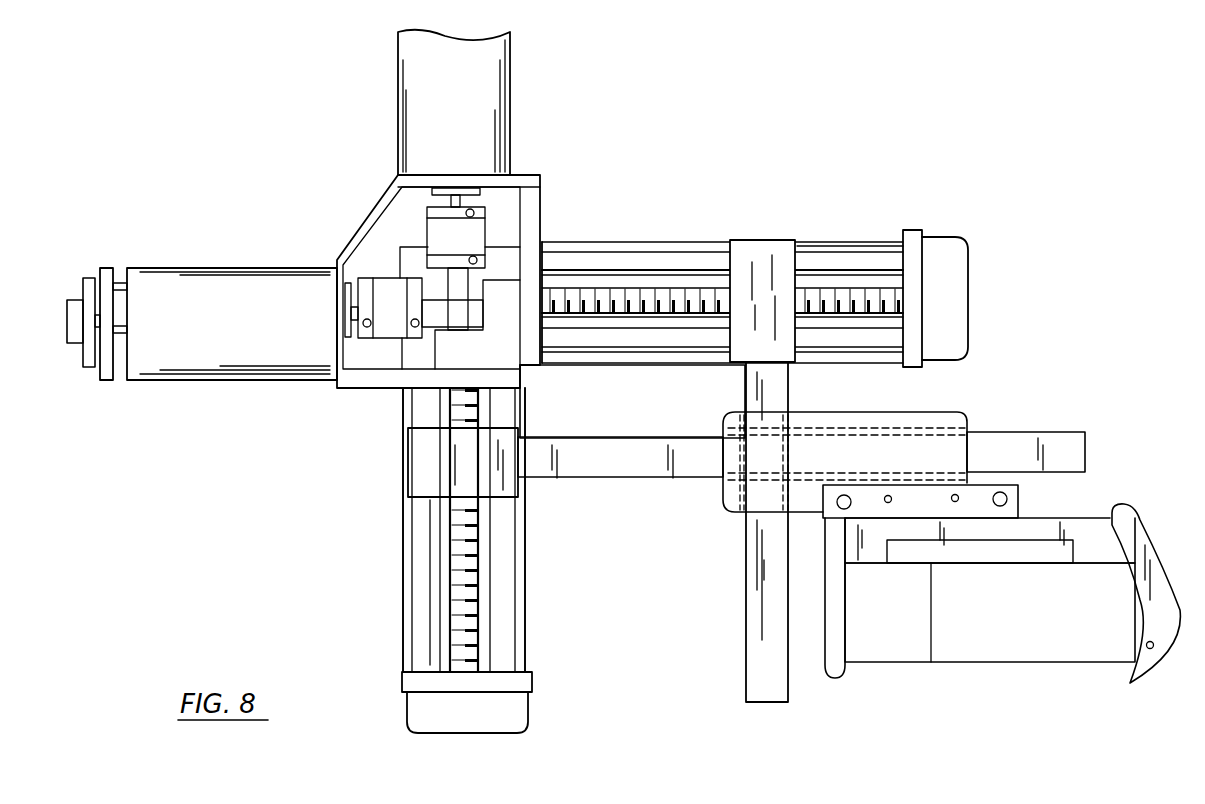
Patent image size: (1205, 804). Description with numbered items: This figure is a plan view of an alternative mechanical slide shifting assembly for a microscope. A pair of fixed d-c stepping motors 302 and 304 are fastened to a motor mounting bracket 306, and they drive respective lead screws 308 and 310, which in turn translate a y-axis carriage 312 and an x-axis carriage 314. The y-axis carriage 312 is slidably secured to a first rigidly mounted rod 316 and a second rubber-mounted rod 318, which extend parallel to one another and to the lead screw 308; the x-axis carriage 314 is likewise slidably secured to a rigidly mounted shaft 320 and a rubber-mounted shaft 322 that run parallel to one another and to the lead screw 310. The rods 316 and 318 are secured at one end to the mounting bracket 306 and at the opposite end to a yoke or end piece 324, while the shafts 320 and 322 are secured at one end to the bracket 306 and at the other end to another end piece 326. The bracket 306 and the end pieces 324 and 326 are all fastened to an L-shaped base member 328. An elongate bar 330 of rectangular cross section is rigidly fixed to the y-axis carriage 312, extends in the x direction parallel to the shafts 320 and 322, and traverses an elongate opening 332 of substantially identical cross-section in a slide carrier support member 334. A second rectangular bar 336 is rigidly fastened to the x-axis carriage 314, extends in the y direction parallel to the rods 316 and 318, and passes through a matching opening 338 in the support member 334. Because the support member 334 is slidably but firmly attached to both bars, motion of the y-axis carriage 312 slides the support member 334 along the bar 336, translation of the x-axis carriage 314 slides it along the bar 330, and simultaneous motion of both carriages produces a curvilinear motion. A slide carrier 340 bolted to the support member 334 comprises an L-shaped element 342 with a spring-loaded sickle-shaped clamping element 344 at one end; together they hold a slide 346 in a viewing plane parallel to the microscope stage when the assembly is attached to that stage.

The fixed d-c stepping motor 302 is at (500, 72).
The fixed d-c stepping motor 304 is at (223, 278).
The motor mounting bracket 306 is at (362, 222).
The lead screw 308 is at (462, 587).
The lead screw 310 is at (637, 292).
The y-axis carriage 312 is at (415, 467).
The x-axis carriage 314 is at (753, 250).
The rigidly mounted rod 316 is at (510, 580).
The rubber-mounted rod 318 is at (430, 635).
The rigidly mounted shaft 320 is at (653, 352).
The rubber-mounted shaft 322 is at (855, 258).
The yoke or end piece 324 is at (525, 682).
The yoke or end piece 326 is at (912, 273).
The L-shaped base member 328 is at (525, 405).
The elongate bar 330 is at (605, 470).
The elongate opening 332 is at (838, 430).
The slide carrier support member 334 is at (933, 413).
The elongate bar 336 is at (758, 593).
The opening 338 is at (740, 492).
The slide carrier 340 is at (1100, 492).
The L-shaped element 342 is at (834, 680).
The spring-loaded sickle-shaped clamping element 344 is at (1135, 532).
The slide 346 is at (1040, 667).